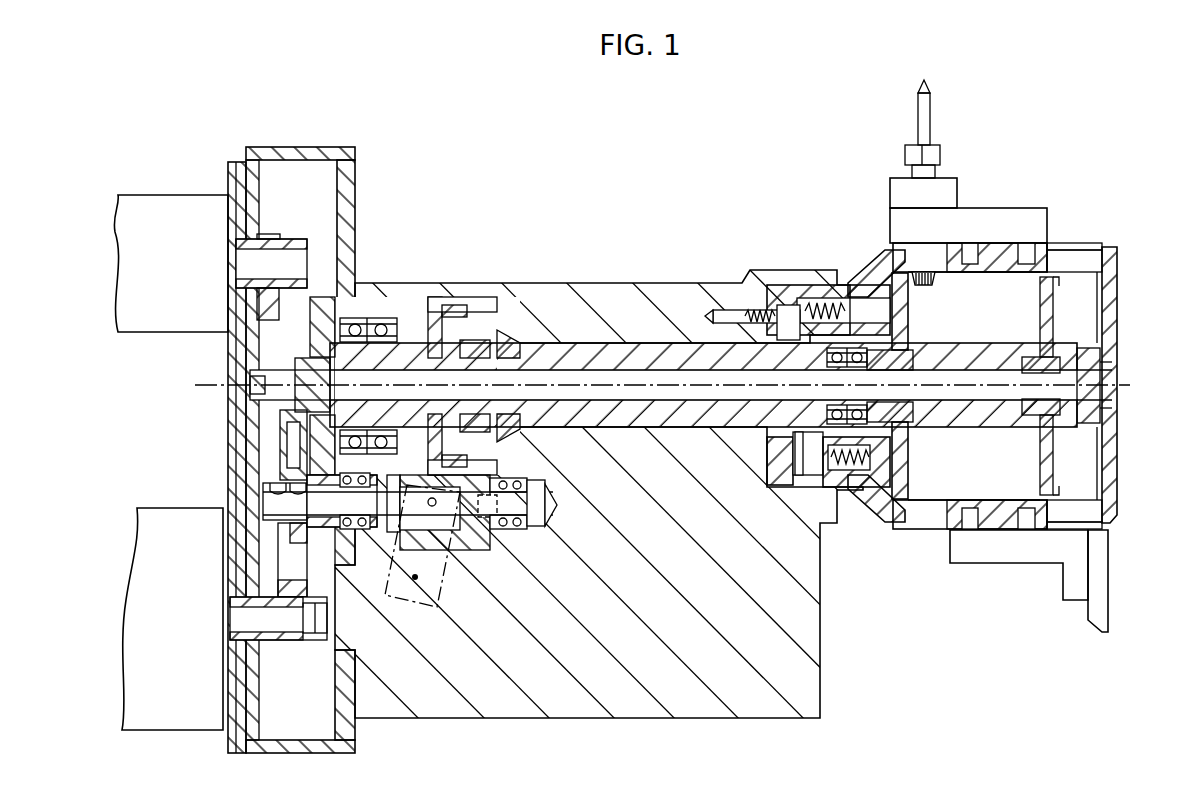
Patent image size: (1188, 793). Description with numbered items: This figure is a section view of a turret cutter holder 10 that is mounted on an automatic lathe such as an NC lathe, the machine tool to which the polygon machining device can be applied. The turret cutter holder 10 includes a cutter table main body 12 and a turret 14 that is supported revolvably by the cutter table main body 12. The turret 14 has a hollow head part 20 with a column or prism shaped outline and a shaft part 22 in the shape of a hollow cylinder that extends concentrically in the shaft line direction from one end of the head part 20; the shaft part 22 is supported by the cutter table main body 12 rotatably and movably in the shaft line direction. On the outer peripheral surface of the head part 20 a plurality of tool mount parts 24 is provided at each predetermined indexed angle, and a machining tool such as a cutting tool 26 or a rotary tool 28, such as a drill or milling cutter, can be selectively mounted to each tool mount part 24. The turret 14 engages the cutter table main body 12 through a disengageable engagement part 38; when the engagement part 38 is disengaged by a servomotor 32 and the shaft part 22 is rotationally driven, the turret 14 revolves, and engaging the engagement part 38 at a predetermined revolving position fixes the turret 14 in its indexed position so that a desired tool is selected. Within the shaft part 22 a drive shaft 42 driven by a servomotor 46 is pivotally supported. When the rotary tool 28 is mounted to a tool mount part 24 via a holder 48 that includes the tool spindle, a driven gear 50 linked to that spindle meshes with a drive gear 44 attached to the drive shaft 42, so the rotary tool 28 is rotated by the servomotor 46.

The turret cutter holder 10 is at (578, 198).
The cutter table main body 12 is at (786, 722).
The turret 14 is at (893, 540).
The head part 20 is at (1107, 243).
The shaft part 22 is at (612, 340).
The tool mount part 24 is at (997, 240).
The cutting tool 26 is at (1101, 610).
The rotary tool 28 is at (931, 133).
The servomotor 32 is at (161, 686).
The engagement part 38 is at (813, 278).
The drive shaft 42 is at (583, 370).
The drive gear 44 is at (882, 290).
The servomotor 46 is at (131, 246).
The holder 48 is at (958, 196).
The driven gear 50 is at (936, 283).